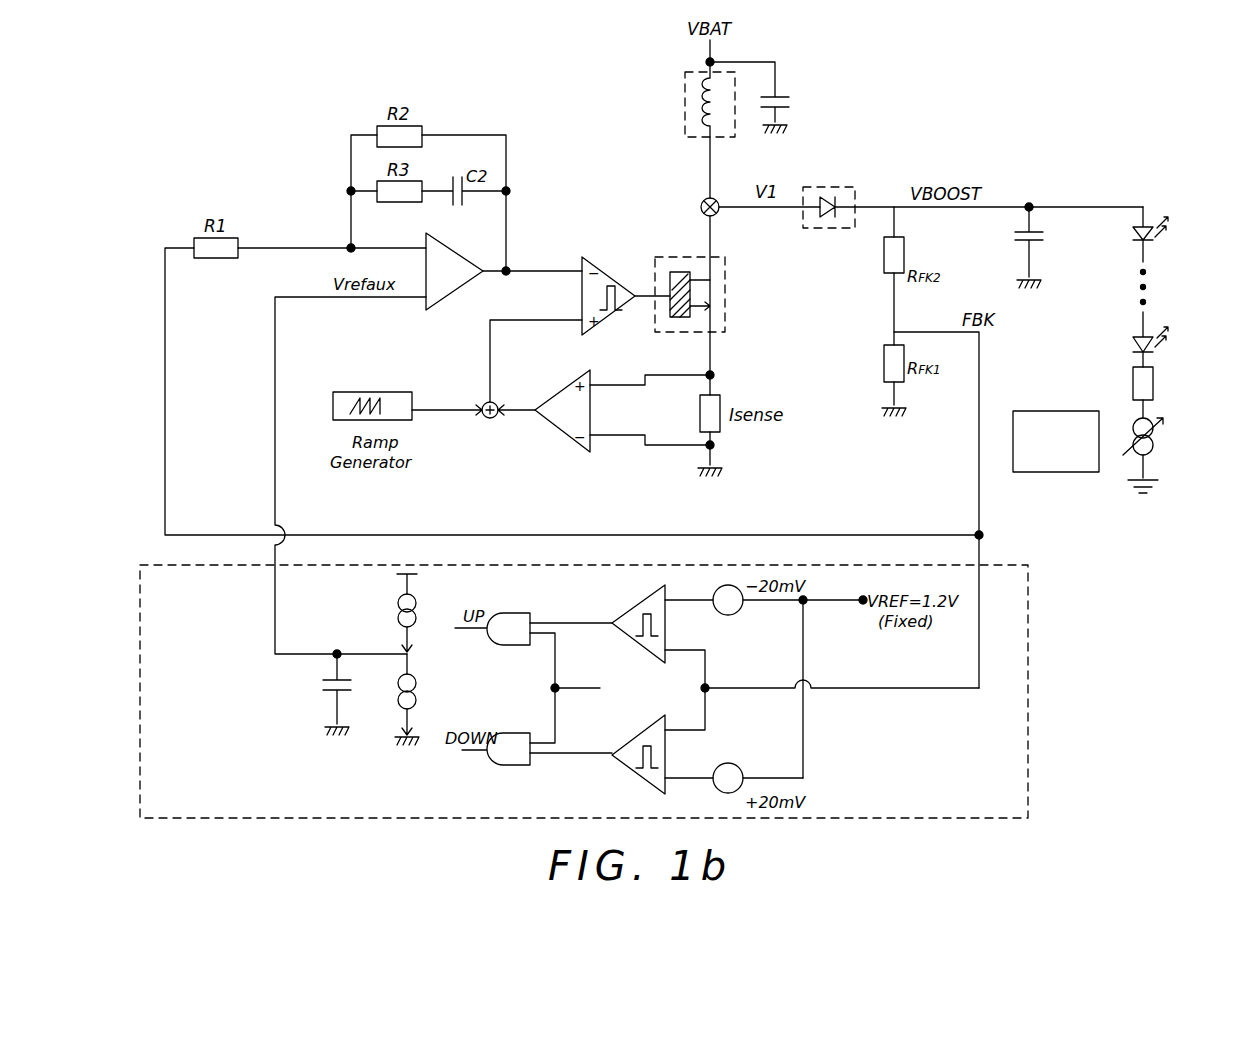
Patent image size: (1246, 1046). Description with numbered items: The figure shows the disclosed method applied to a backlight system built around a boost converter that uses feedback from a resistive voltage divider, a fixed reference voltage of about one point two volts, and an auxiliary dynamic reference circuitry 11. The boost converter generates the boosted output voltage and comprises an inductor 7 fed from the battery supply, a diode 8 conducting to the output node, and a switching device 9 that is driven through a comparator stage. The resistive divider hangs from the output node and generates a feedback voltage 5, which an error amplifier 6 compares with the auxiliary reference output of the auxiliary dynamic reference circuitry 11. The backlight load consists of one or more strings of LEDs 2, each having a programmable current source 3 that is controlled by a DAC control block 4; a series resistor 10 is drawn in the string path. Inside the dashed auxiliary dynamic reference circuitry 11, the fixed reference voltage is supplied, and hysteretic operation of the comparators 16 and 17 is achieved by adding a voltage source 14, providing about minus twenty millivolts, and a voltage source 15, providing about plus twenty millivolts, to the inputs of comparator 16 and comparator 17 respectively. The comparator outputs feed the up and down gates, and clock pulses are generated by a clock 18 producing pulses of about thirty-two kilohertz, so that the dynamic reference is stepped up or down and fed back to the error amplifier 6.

The strings of LEDs 2 is at (1163, 240).
The programmable current source (IDAC) 3 is at (1155, 445).
The DAC control block 4 is at (1075, 411).
The feedback voltage FBK 5 is at (980, 350).
The error amplifier 6 is at (463, 294).
The inductor 7 is at (685, 78).
The diode 8 is at (828, 228).
The switching device 9 is at (725, 293).
The resistor 10 is at (1153, 383).
The auxiliary dynamic reference circuitry 11 is at (1030, 708).
The voltage source 14 is at (728, 616).
The voltage source 15 is at (729, 763).
The comparator 16 is at (630, 610).
The comparator 17 is at (630, 740).
The clock 18 is at (578, 690).